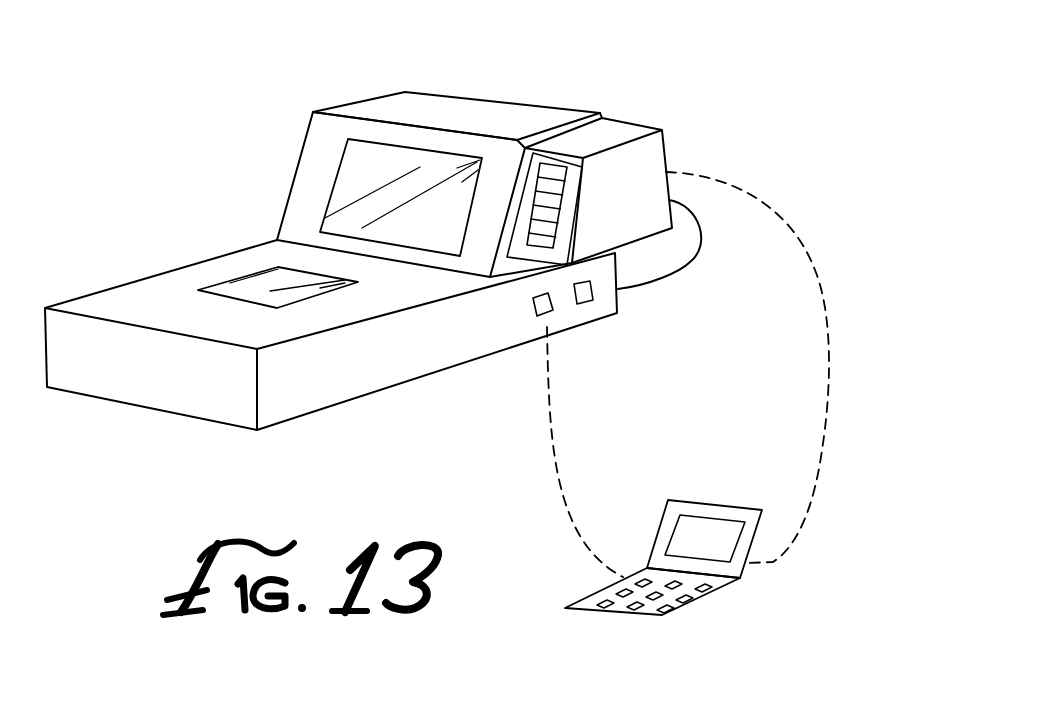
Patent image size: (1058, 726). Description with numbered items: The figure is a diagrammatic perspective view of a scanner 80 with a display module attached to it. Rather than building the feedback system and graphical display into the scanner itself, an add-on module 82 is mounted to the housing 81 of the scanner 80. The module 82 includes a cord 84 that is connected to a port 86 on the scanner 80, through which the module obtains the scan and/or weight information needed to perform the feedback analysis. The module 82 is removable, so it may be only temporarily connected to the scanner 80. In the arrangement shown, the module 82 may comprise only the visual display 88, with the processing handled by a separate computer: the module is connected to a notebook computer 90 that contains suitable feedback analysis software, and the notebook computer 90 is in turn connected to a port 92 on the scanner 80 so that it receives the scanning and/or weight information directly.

The scanner 80 is at (358, 228).
The housing 81 is at (474, 151).
The add-on module 82 is at (581, 159).
The cord 84 is at (673, 273).
The port 86 is at (585, 296).
The visual display 88 is at (552, 182).
The notebook computer 90 is at (712, 589).
The port 92 is at (542, 306).